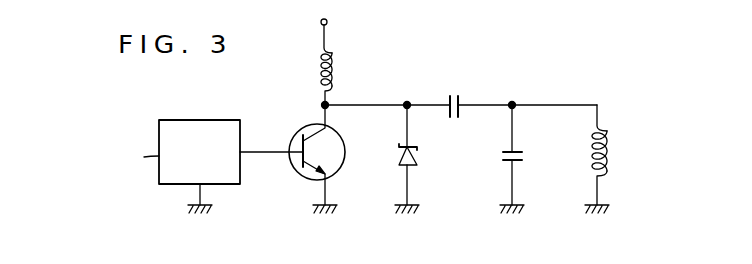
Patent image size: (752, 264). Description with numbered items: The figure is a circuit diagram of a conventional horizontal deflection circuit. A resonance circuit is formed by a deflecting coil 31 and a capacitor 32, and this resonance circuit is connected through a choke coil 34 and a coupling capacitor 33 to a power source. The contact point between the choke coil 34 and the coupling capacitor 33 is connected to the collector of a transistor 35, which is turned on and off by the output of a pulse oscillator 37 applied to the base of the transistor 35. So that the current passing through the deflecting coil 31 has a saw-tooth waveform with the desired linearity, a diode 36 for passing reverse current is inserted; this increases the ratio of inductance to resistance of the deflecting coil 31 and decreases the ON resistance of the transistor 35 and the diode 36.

The deflecting coil 31 is at (610, 156).
The capacitor 32 is at (524, 156).
The coupling capacitor 33 is at (452, 93).
The choke coil 34 is at (332, 77).
The transistor 35 is at (343, 154).
The diode 36 is at (418, 157).
The pulse oscillator 37 is at (187, 120).